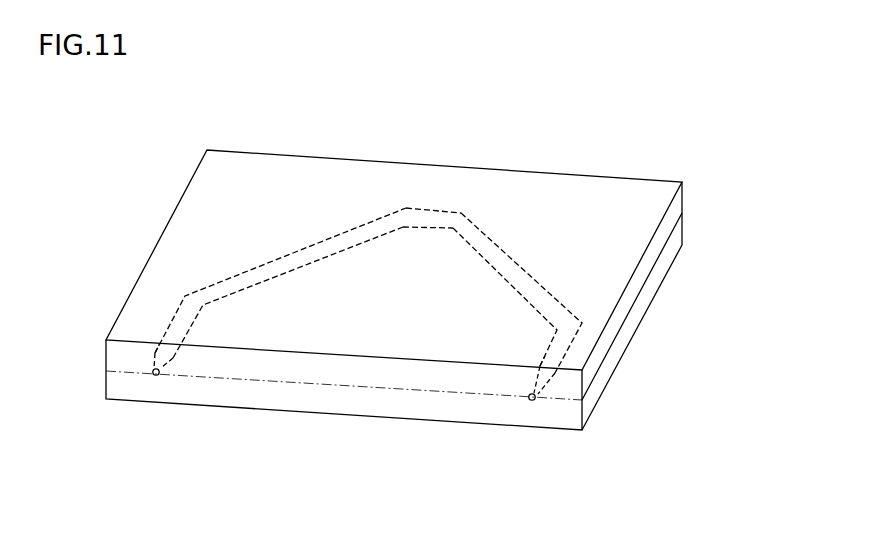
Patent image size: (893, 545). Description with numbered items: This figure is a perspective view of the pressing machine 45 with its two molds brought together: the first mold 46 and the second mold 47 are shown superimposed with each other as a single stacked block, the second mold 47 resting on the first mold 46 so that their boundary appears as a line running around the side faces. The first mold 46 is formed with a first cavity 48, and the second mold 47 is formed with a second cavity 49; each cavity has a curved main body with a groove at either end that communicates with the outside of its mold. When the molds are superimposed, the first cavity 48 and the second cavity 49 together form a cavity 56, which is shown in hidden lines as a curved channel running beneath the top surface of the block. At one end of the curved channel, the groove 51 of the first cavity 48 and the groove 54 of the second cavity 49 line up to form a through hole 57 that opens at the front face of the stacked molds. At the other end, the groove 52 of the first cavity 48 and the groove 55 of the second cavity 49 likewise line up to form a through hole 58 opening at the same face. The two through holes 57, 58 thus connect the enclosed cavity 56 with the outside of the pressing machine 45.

The pressing machine 45 is at (638, 162).
The first mold 46 is at (673, 245).
The second mold 47 is at (673, 205).
The first cavity 48 is at (406, 208).
The second cavity 49 is at (499, 247).
The groove 51 is at (162, 373).
The groove 52 is at (538, 398).
The groove 54 is at (151, 372).
The groove 55 is at (527, 397).
The cavity 56 is at (280, 283).
The through hole 57 is at (156, 378).
The through hole 58 is at (532, 403).